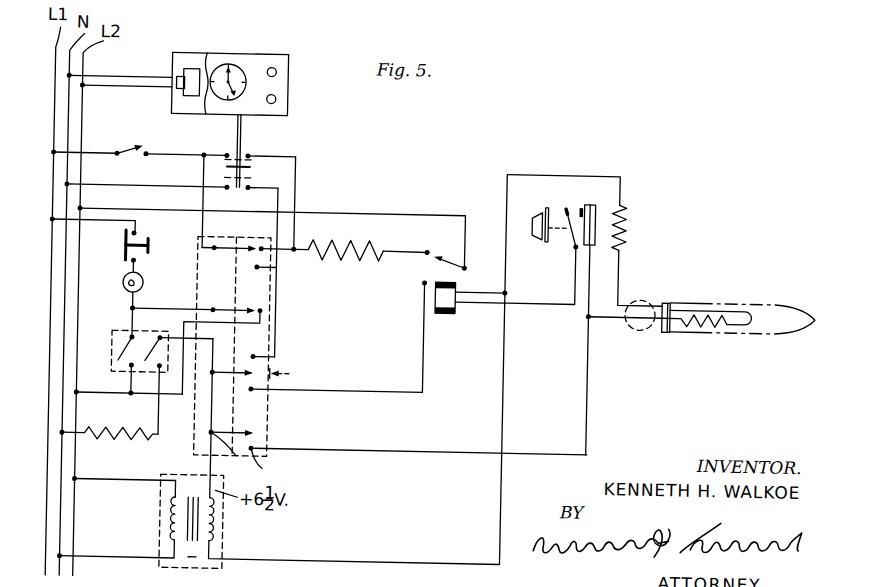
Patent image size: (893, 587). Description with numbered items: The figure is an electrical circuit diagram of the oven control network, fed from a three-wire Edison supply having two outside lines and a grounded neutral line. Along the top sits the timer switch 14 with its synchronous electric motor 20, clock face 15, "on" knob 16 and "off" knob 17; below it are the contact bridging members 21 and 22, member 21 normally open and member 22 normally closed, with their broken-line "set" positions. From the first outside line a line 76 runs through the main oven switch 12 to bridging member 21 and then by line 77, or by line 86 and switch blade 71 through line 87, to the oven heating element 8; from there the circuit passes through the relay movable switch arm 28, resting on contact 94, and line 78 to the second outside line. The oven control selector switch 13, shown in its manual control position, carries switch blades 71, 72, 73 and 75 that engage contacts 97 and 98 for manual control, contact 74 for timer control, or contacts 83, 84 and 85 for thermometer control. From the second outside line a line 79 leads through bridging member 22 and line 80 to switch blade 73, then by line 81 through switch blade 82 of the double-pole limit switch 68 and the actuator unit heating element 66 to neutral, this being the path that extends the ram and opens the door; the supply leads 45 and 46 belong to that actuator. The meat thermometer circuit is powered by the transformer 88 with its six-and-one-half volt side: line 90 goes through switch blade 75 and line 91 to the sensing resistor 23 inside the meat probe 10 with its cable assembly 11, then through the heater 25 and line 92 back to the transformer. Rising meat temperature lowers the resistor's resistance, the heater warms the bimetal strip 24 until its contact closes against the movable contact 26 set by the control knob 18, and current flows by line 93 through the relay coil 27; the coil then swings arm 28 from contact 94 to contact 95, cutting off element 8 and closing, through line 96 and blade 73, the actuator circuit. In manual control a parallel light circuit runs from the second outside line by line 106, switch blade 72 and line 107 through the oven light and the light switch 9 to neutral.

The electric heating element 8 is at (352, 241).
The light switch 9 is at (146, 248).
The meat probe 10 is at (735, 286).
The cable assembly 11 is at (647, 288).
The main oven switch 12 is at (124, 151).
The oven control selector switch 13 is at (292, 372).
The timer switch 14 is at (291, 69).
The clock face 15 is at (231, 60).
The "on" knob 16 is at (274, 63).
The "off" knob 17 is at (277, 95).
The meat thermometer control knob 18 is at (546, 205).
The synchronous electric motor 20 is at (188, 66).
The contact bridging member 21 is at (252, 158).
The contact bridging member 22 is at (244, 184).
The sensing resistor 23 is at (718, 317).
The bimetal strip 24 is at (589, 194).
The heater 25 is at (624, 197).
The movable contact 26 is at (574, 220).
The relay coil 27 is at (460, 305).
The movable switch arm 28 is at (462, 254).
The electrical supply lead 45 is at (166, 425).
The electrical supply lead 46 is at (96, 440).
The actuator unit heating element 66 is at (144, 438).
The limit switch 68 is at (118, 339).
The switch blade 71 is at (235, 242).
The switch blade 72 is at (236, 304).
The switch blade 73 is at (231, 395).
The contact 74 is at (259, 352).
The switch blade 75 is at (243, 452).
The line 76 is at (109, 149).
The line 77 is at (298, 170).
The line 78 is at (396, 208).
The line 79 is at (150, 182).
The line 80 is at (278, 298).
The line 81 is at (216, 367).
The switch blade 82 is at (160, 343).
The contact 83 is at (261, 263).
The contact 84 is at (258, 387).
The contact 85 is at (266, 466).
The line 86 is at (202, 198).
The line 87 is at (304, 248).
The meat thermometer transformer 88 is at (169, 515).
The line 90 is at (216, 463).
The line 91 is at (403, 444).
The line 92 is at (335, 557).
The line 93 is at (562, 294).
The contact 94 is at (429, 245).
The contact 95 is at (426, 276).
The line 96 is at (382, 372).
The contact 97 is at (265, 242).
The contact 98 is at (265, 306).
The line 106 is at (146, 394).
The line 107 is at (180, 306).